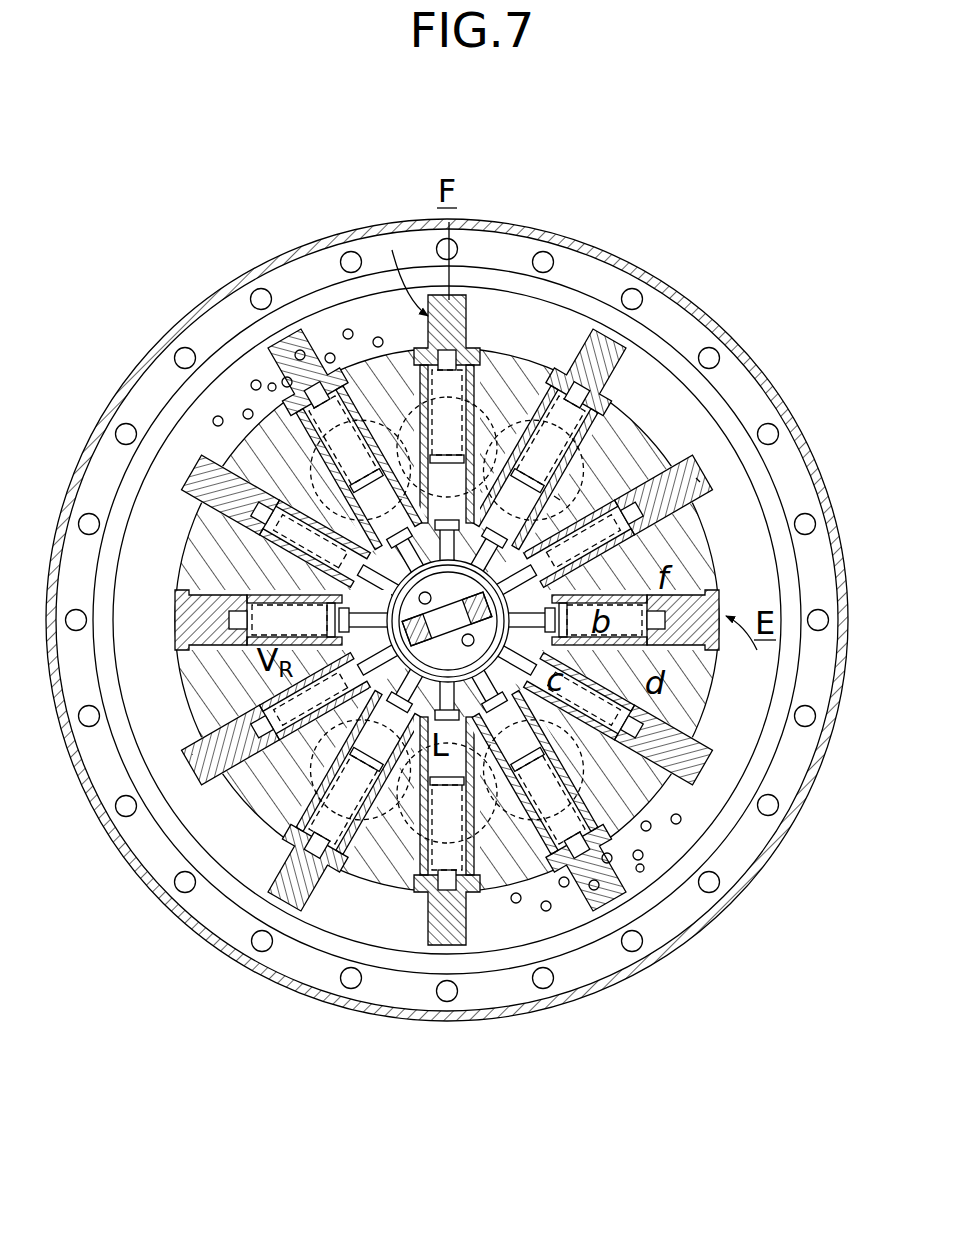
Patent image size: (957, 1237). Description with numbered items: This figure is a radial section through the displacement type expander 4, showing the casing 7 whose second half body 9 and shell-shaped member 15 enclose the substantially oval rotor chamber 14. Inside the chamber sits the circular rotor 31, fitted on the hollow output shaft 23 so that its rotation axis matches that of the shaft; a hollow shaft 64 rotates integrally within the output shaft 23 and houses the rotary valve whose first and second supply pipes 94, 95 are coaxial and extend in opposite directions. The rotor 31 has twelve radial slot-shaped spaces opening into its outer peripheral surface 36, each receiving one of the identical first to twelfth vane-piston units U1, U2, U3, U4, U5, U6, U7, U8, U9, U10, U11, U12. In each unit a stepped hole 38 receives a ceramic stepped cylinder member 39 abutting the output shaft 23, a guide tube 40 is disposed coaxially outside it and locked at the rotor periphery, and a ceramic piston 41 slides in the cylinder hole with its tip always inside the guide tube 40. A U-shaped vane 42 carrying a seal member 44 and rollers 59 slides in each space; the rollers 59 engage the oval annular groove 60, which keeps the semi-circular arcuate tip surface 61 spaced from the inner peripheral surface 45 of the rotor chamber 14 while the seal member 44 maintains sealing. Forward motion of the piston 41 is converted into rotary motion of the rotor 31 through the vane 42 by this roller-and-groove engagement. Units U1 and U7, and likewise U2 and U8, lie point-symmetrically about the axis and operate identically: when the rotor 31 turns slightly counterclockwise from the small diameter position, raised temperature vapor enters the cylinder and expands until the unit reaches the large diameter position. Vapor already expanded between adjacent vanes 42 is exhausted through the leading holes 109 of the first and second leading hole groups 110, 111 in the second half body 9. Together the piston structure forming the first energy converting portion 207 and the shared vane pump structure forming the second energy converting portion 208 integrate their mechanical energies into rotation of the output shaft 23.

The displacement type expander 4 is at (690, 272).
The casing 7 is at (737, 338).
The second half body 9 is at (640, 262).
The rotor chamber 14 is at (560, 308).
The shell-shaped member 15 is at (222, 292).
The output shaft 23 is at (447, 545).
The rotor 31 is at (712, 716).
The outer peripheral surface 36 is at (557, 526).
The stepped hole 38 is at (593, 533).
The stepped cylinder member 39 is at (652, 540).
The guide tube 40 is at (668, 597).
The piston 41 is at (627, 635).
The vane 42 is at (708, 716).
The seal member 44 is at (720, 612).
The inner peripheral surface 45 is at (538, 330).
The roller 59 is at (385, 398).
The annular groove 60 is at (500, 445).
The semi-circular arcuate tip surface 61 is at (702, 606).
The hollow shaft 64 is at (350, 528).
The first supply pipe 94 is at (560, 712).
The second supply pipe 95 is at (330, 602).
The leading holes 109 is at (322, 350).
The first leading hole group 110 is at (270, 385).
The second leading hole group 111 is at (642, 870).
The first energy converting portion 207 is at (562, 500).
The second energy converting portion 208 is at (702, 482).
The first vane-piston unit U1 is at (726, 624).
The second vane-piston unit U2 is at (705, 460).
The third vane-piston unit U3 is at (622, 353).
The fourth vane-piston unit U4 is at (430, 318).
The fifth vane-piston unit U5 is at (293, 345).
The sixth vane-piston unit U6 is at (200, 490).
The seventh vane-piston unit U7 is at (176, 620).
The eighth vane-piston unit U8 is at (200, 760).
The ninth vane-piston unit U9 is at (280, 856).
The tenth vane-piston unit U10 is at (420, 935).
The eleventh vane-piston unit U11 is at (605, 893).
The twelfth vane-piston unit U12 is at (697, 762).